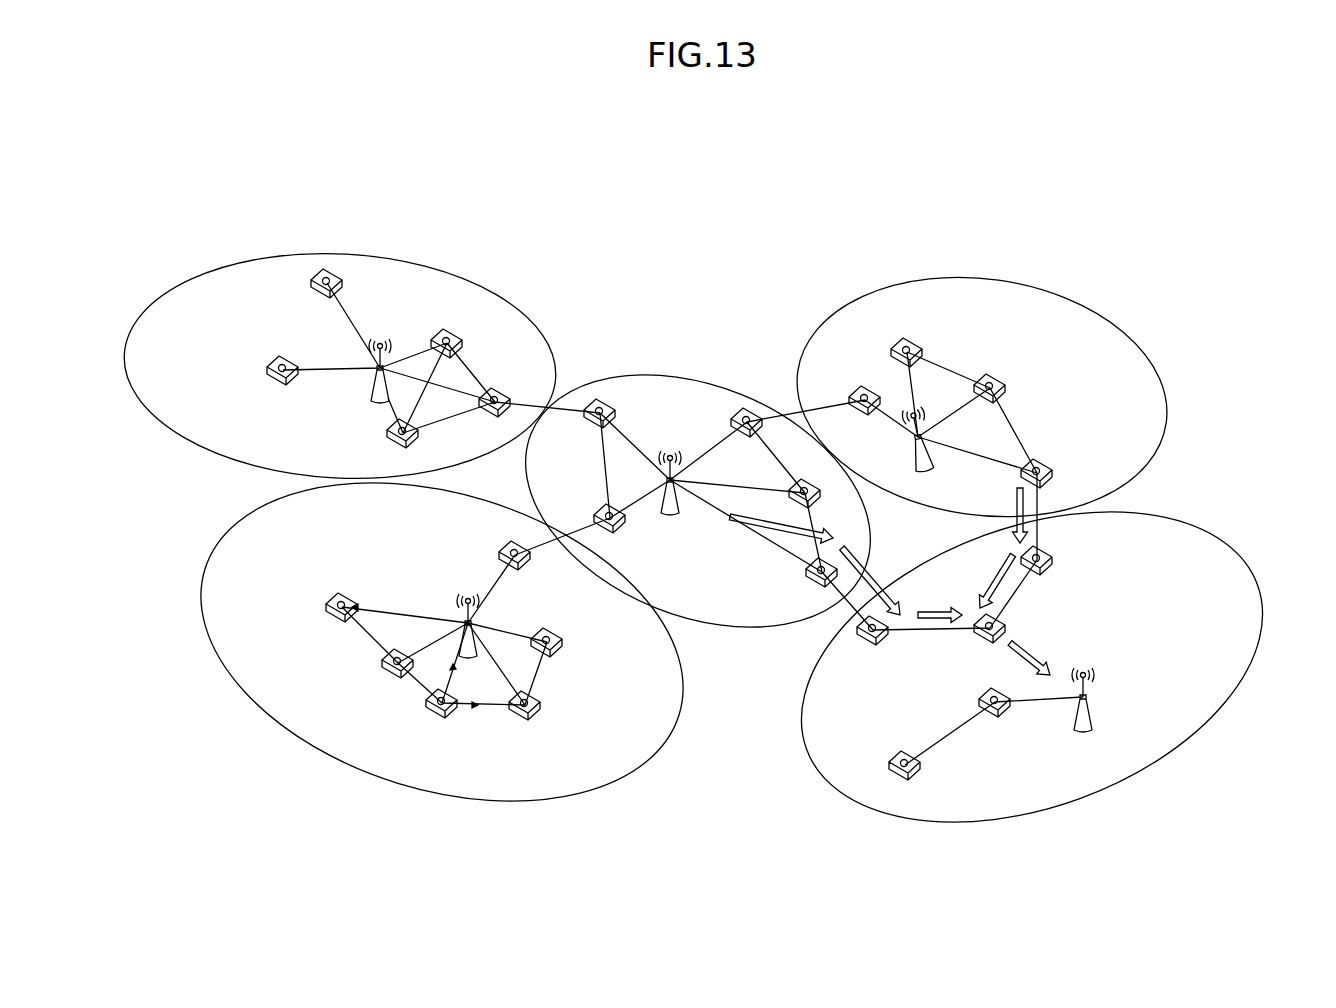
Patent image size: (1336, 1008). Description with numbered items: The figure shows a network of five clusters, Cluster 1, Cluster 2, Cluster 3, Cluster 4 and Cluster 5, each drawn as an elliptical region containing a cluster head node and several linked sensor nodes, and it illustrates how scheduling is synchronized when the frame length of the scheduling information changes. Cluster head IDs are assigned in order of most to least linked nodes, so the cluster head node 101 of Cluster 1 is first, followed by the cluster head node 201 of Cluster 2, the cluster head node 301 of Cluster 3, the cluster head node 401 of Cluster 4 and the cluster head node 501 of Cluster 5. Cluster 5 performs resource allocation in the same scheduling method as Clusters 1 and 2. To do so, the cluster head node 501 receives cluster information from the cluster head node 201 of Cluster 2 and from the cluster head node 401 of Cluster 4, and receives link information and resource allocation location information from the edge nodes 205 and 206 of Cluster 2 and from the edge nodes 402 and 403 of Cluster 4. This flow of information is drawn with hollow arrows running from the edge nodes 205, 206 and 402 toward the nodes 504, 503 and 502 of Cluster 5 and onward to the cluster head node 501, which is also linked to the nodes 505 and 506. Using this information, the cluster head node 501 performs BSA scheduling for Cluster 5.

The Cluster 1 is at (456, 619).
The Cluster 2 is at (680, 488).
The Cluster 3 is at (370, 379).
The Cluster 4 is at (919, 447).
The Cluster 5 is at (1083, 712).
The cluster head node 101 is at (330, 693).
The cluster head node 201 is at (739, 559).
The cluster head node 301 is at (478, 331).
The cluster head node 401 is at (812, 372).
The cluster head node 501 is at (1167, 744).
The edge node 205 is at (838, 501).
The edge node 206 is at (787, 584).
The edge node 402 is at (1067, 470).
The edge node 403 is at (1022, 384).
The sensor node 502 of cluster 5 502 is at (972, 651).
The sensor node 503 of cluster 5 503 is at (1070, 566).
The sensor node 504 of cluster 5 504 is at (868, 653).
The sensor node 505 of cluster 5 505 is at (1006, 726).
The sensor node 506 of cluster 5 506 is at (873, 759).